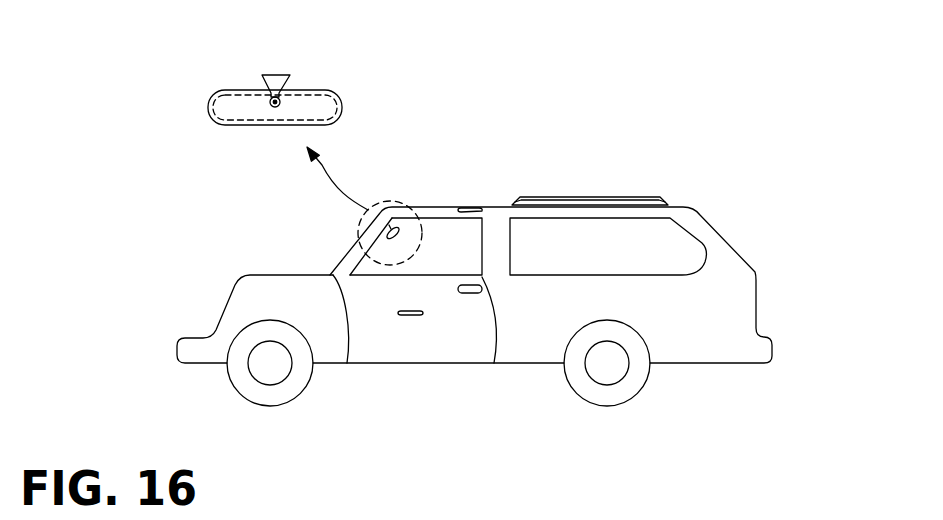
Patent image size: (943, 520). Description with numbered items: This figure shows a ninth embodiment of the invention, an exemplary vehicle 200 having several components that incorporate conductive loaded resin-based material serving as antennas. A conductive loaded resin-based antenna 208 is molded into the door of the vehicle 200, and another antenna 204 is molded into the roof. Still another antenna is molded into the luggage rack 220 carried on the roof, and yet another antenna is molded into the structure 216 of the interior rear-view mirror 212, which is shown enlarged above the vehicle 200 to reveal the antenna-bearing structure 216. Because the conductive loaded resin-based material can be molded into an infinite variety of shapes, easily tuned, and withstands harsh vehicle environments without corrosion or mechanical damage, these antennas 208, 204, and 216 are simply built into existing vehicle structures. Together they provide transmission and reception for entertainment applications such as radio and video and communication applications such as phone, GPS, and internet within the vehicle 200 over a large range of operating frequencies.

The vehicle 200 is at (662, 215).
The antenna 204 is at (488, 206).
The antenna 208 is at (408, 315).
The interior rear-view mirror 212 is at (225, 90).
The structure of the interior rear-view mirror 216 is at (315, 105).
The luggage rack 220 is at (580, 198).